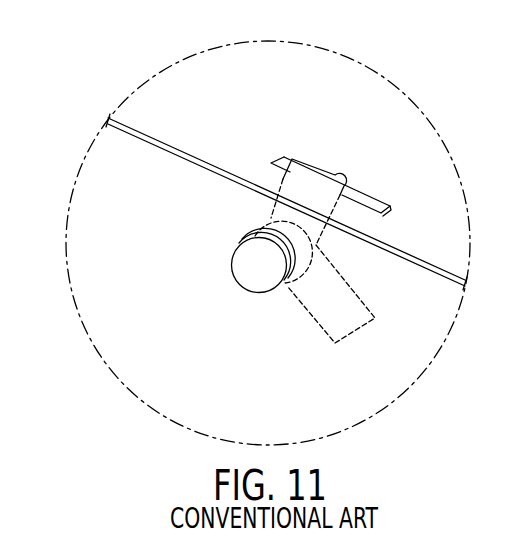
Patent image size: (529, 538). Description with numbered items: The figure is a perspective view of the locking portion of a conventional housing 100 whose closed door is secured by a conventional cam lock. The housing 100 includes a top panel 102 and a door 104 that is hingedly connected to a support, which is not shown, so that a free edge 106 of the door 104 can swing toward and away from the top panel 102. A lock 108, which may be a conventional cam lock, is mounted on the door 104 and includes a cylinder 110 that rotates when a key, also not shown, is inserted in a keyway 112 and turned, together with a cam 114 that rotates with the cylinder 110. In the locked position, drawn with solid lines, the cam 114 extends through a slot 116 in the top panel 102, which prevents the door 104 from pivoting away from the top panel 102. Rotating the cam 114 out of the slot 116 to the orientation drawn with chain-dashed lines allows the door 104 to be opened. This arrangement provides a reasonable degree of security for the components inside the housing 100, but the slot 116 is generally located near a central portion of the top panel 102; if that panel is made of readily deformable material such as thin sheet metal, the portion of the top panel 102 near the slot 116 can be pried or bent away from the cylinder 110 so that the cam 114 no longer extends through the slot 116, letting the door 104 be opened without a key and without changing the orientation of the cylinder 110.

The housing 100 is at (252, 243).
The top panel 102 is at (422, 144).
The door 104 is at (395, 383).
The free edge 106 is at (422, 277).
The lock 108 is at (256, 317).
The cylinder 110 is at (252, 219).
The keyway 112 is at (258, 266).
The cam 114 is at (345, 172).
The slot 116 is at (378, 198).